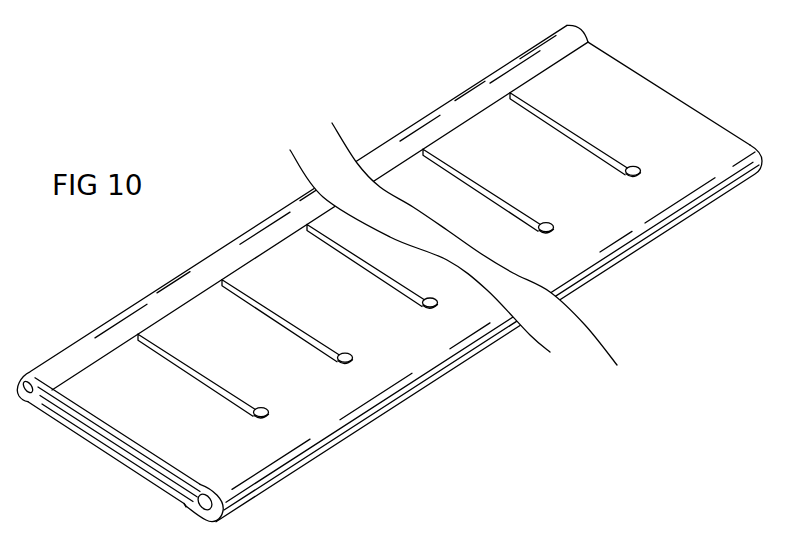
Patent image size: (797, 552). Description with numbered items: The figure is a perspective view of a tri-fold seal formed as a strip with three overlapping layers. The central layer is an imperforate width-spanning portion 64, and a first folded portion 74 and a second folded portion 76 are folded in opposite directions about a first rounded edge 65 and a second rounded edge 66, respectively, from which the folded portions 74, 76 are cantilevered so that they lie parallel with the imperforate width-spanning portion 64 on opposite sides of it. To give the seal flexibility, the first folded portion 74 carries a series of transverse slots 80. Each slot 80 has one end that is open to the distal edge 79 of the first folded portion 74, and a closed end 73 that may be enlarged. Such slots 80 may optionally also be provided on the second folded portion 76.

The imperforate width-spanning portion 64 is at (132, 458).
The first rounded edge 65 is at (88, 332).
The second rounded edge 66 is at (310, 459).
The closed end 73 is at (267, 410).
The first folded portion 74 is at (178, 422).
The second folded portion 76 is at (99, 451).
The distal edge 79 is at (180, 305).
The transverse slot 80 is at (202, 373).